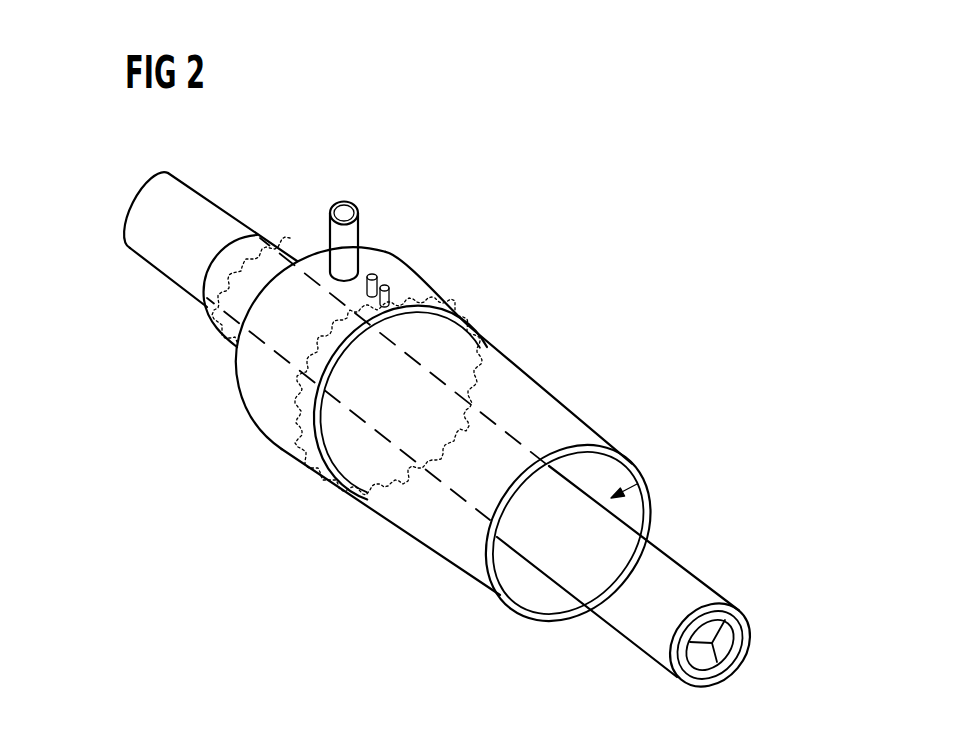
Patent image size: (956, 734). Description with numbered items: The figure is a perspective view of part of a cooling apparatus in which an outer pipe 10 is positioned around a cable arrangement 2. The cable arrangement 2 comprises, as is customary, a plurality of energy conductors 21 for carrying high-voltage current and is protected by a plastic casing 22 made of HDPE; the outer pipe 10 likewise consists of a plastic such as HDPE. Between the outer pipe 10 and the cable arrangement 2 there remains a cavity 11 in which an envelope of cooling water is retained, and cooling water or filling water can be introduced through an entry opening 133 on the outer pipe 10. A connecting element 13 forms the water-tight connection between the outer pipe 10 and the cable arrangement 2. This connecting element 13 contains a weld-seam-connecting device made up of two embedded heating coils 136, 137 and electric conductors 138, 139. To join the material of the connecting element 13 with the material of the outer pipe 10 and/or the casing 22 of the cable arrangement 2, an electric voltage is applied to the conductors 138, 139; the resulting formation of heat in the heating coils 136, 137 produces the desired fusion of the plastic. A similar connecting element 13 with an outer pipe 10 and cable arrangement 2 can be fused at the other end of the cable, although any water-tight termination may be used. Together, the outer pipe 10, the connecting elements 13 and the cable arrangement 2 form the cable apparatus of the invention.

The cable arrangement 2 is at (208, 213).
The outer pipe 10 is at (518, 387).
The cavity 11 is at (637, 484).
The connecting element 13 is at (250, 392).
The energy conductors 21 is at (728, 650).
The plastic casing 22 is at (742, 615).
The entry opening 133 is at (341, 209).
The heating coil 136 is at (281, 241).
The heating coil 137 is at (297, 427).
The electric conductor 138 is at (372, 273).
The electric conductor 139 is at (389, 286).